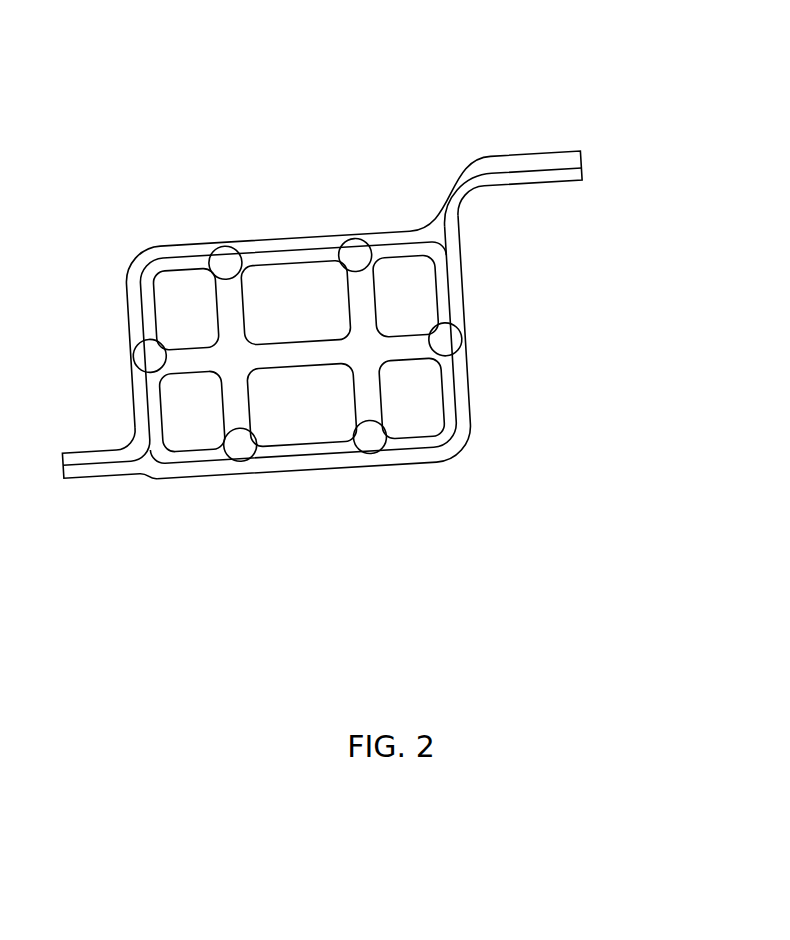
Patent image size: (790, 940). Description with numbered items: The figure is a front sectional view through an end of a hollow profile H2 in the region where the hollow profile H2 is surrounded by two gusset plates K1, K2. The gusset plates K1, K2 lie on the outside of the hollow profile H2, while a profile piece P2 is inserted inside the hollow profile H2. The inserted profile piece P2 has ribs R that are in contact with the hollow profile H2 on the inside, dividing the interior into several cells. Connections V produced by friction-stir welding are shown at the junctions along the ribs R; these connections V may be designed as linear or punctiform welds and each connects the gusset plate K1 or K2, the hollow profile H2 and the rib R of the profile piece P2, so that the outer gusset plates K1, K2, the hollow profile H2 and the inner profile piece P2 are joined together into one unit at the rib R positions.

The connections V is at (343, 240).
The gusset plate K2 is at (152, 248).
The gusset plate K1 is at (152, 480).
The profile piece P2 is at (358, 343).
The hollow profile H2 is at (445, 433).
The ribs R is at (234, 402).